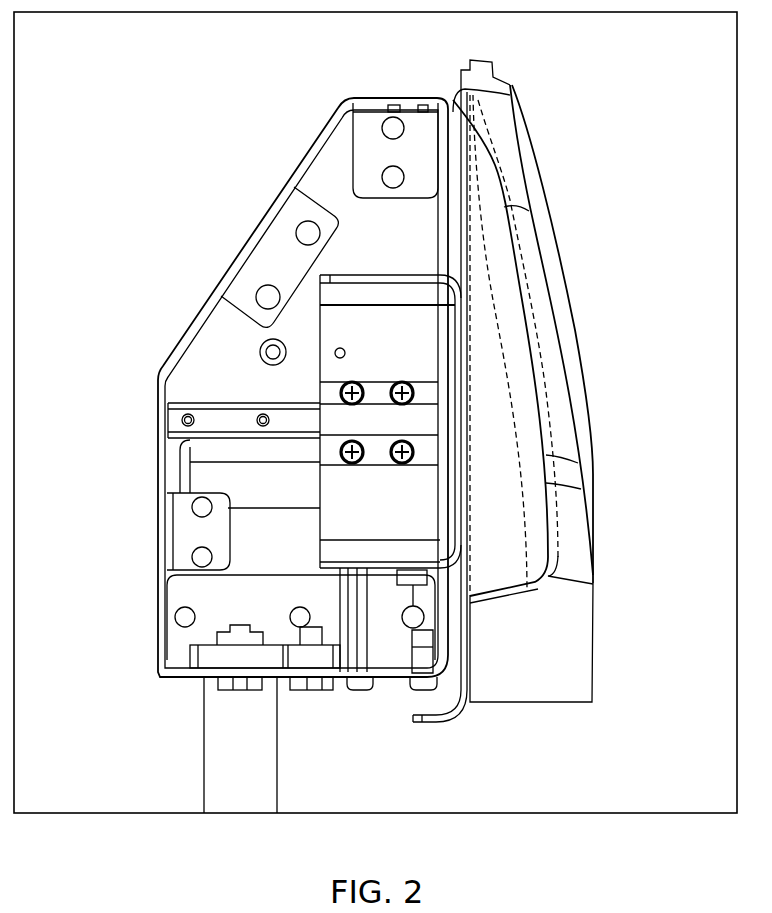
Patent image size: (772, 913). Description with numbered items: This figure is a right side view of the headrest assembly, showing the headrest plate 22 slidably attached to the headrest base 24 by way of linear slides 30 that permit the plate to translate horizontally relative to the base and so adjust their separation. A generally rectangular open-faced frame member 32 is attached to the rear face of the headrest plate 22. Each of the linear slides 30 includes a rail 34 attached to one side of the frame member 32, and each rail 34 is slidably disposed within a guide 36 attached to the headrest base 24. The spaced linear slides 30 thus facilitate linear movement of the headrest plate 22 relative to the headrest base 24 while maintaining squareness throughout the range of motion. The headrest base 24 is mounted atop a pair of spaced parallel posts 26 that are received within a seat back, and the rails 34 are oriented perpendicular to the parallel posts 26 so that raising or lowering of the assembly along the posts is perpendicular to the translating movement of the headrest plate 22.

The headrest plate 22 is at (550, 222).
The headrest base 24 is at (297, 170).
The parallel posts 26 is at (278, 764).
The linear slides 30 is at (257, 393).
The frame member 32 is at (387, 322).
The rail 34 is at (217, 421).
The guide 36 is at (343, 423).